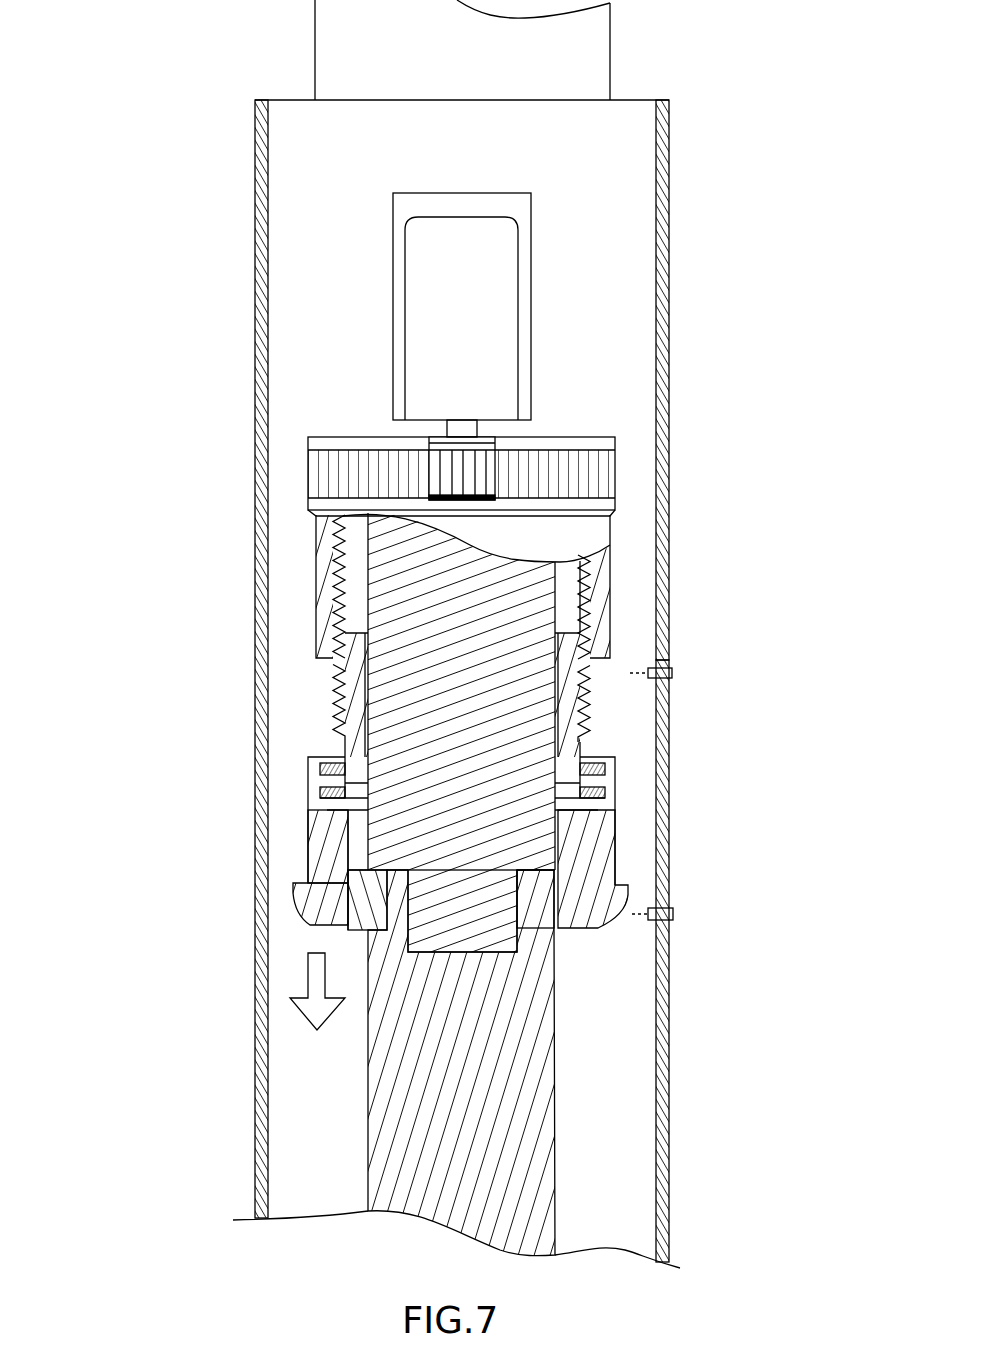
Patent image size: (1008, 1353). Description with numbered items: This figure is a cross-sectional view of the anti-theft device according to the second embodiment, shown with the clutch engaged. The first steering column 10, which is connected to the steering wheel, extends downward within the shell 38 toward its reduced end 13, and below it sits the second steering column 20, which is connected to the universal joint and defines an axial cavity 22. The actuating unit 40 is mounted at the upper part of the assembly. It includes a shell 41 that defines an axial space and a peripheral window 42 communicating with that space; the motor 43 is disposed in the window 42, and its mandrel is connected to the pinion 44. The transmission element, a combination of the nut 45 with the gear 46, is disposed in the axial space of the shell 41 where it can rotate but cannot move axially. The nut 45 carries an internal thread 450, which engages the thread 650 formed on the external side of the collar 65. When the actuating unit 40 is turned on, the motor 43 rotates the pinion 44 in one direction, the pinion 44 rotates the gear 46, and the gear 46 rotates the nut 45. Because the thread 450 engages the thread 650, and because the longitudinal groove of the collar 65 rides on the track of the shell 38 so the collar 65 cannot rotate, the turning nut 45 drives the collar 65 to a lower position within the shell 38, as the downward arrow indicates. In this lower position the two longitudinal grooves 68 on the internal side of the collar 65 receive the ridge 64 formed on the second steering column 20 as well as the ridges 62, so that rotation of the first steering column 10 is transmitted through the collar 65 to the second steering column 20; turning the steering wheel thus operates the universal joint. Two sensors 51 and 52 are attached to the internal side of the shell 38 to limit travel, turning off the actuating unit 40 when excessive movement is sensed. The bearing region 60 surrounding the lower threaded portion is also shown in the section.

The actuating unit 40 is at (238, 223).
The shell 41 is at (665, 135).
The peripheral window 42 is at (531, 240).
The motor 43 is at (497, 343).
The pinion 44 is at (478, 455).
The gear 46 is at (343, 465).
The nut 45 is at (318, 550).
The thread 450 is at (590, 580).
The first steering column 10 is at (440, 640).
The thread 650 is at (590, 712).
The sensor 52 is at (660, 672).
The sensor 51 is at (675, 913).
The bearing assembly 60 is at (300, 772).
The ridges 62 is at (365, 848).
The longitudinal grooves 68 is at (330, 880).
The ridge 64 is at (355, 890).
The collar 65 is at (612, 838).
The reduced end 13 is at (440, 905).
The second steering column 20 is at (405, 1135).
The axial cavity 22 is at (500, 903).
The shell 38 is at (667, 975).